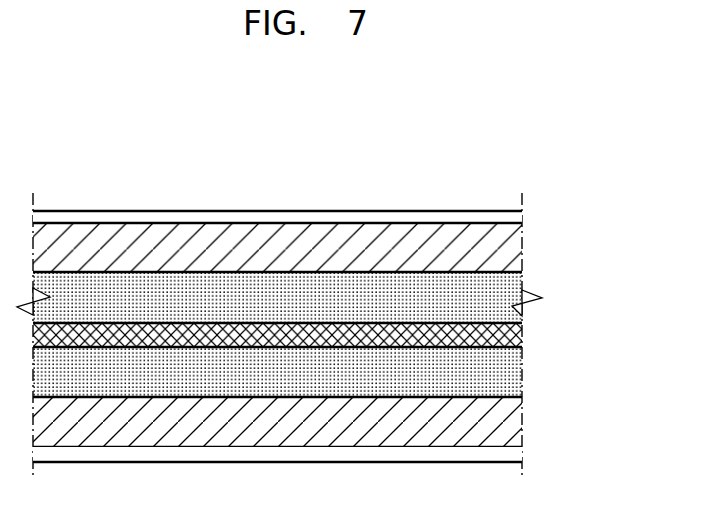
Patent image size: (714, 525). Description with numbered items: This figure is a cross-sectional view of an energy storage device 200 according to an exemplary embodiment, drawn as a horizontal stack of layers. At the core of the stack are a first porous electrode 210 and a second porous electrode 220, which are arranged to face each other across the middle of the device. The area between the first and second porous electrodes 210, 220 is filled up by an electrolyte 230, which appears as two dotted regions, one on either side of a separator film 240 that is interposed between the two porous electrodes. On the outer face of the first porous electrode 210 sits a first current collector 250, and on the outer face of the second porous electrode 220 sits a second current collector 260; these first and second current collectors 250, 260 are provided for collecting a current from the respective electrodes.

The energy storage device 200 is at (460, 172).
The first porous electrode 210 is at (505, 253).
The second porous electrode 220 is at (505, 420).
The electrolyte 230 is at (492, 298).
The separator film 240 is at (523, 337).
The first current collector 250 is at (523, 212).
The second current collector 260 is at (510, 454).